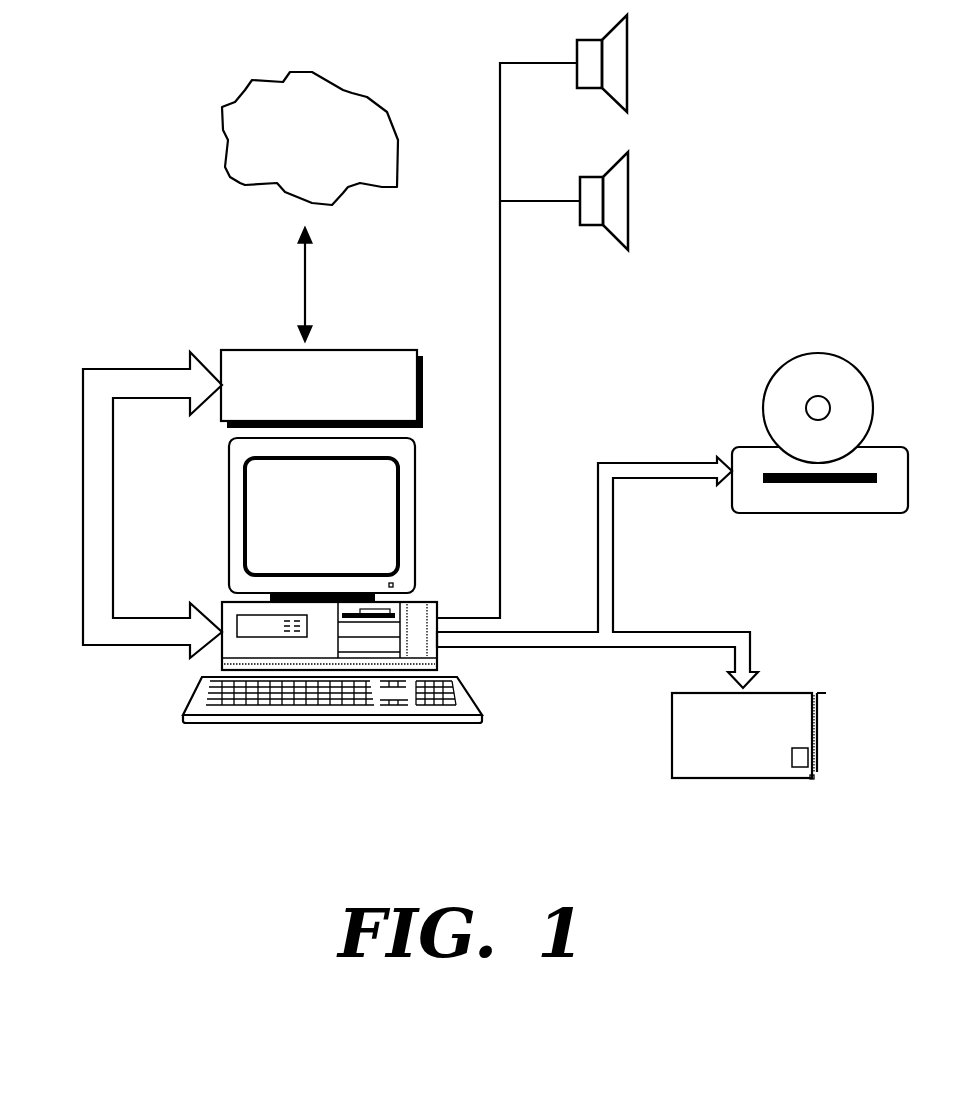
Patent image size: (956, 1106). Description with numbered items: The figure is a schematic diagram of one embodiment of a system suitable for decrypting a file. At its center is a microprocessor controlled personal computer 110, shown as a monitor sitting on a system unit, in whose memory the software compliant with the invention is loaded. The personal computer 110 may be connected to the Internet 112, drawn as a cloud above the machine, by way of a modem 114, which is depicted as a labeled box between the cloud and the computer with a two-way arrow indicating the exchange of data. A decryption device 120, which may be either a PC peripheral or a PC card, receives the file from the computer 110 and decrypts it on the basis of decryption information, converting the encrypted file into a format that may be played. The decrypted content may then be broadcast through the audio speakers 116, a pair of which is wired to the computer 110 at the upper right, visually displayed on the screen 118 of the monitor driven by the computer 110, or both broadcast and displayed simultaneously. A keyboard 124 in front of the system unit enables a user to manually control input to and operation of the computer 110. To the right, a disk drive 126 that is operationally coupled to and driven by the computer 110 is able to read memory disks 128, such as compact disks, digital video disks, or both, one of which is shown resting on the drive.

The personal computer 110 is at (430, 600).
The Internet 112 is at (310, 138).
The modem 114 is at (388, 350).
The audio speakers 116 is at (627, 45).
The screen 118 is at (343, 532).
The decryption device 120 is at (738, 774).
The keyboard 124 is at (313, 723).
The disk drive 126 is at (740, 447).
The memory disks 128 is at (780, 372).